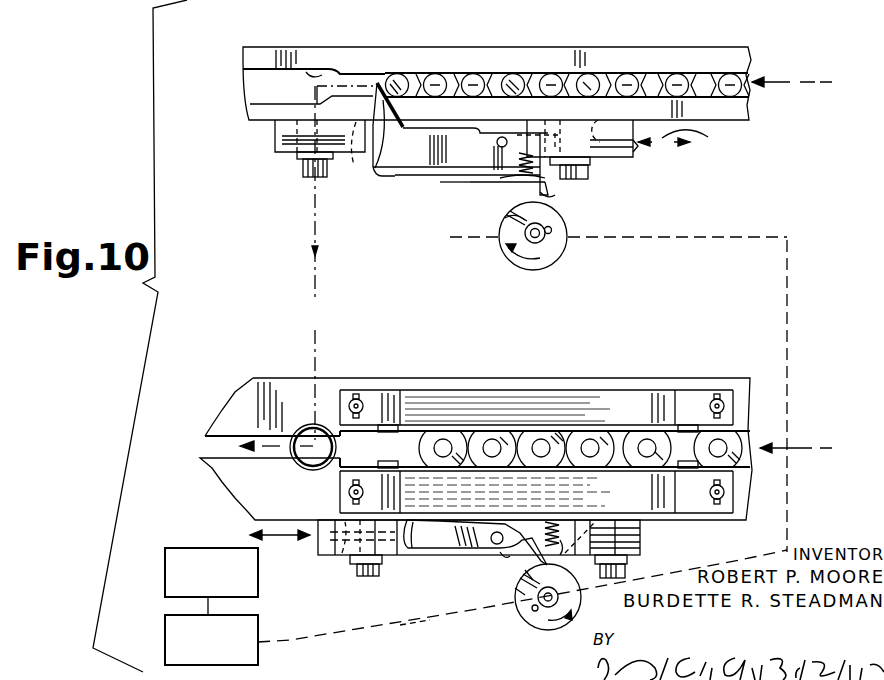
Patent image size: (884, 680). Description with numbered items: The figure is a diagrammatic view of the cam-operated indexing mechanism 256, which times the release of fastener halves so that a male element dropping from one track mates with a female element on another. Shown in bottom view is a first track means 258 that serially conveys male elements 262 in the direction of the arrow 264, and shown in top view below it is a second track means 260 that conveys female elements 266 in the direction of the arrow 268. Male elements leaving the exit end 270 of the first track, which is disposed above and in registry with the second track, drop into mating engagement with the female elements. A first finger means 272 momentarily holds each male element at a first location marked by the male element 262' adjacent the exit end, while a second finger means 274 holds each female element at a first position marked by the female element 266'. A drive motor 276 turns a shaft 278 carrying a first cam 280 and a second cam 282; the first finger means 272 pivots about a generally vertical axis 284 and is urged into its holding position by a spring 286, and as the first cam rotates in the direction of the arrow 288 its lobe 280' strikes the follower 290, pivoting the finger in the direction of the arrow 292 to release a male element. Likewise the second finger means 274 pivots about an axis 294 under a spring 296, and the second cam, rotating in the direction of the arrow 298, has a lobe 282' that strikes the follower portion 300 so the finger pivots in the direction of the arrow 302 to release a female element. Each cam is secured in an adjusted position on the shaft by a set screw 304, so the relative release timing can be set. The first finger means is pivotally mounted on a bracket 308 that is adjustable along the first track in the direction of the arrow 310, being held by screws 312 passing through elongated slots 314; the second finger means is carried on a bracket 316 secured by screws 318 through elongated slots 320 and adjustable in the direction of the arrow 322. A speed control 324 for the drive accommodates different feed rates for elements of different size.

The cam-operated indexing mechanism 256 is at (222, 176).
The first track means 258 is at (453, 48).
The second track means 260 is at (503, 377).
The male elements 262 is at (507, 237).
The male element at first location 262' is at (385, 48).
The arrow 264 is at (784, 84).
The female elements 266 is at (495, 421).
The female element at first position 266' is at (458, 404).
The arrow 268 is at (812, 448).
The exit end 270 is at (308, 72).
The first finger means 272 is at (375, 145).
The second finger means 274 is at (416, 530).
The drive motor 276 is at (165, 640).
The shaft 278 is at (412, 622).
The first cam 280 is at (494, 212).
The lobe of first cam 280' is at (578, 203).
The second cam 282 is at (485, 632).
The lobe of second cam 282' is at (495, 608).
The vertical axis 284 is at (397, 152).
The spring 286 is at (527, 150).
The arrow 288 is at (545, 268).
The follower 290 is at (525, 190).
The arrow 292 is at (388, 172).
The axis 294 is at (500, 552).
The spring 296 is at (567, 538).
The arrow 298 is at (560, 630).
The follower portion 300 is at (542, 524).
The arrow 302 is at (495, 544).
The set screw 304 is at (552, 230).
The bracket 308 is at (638, 146).
The arrow 310 is at (692, 140).
The screws 312 is at (307, 169).
The elongated slots 314 is at (614, 112).
The bracket 316 is at (325, 556).
The screws 318 is at (365, 577).
The elongated slots 320 is at (597, 506).
The arrow 322 is at (283, 542).
The speed control 324 is at (165, 578).